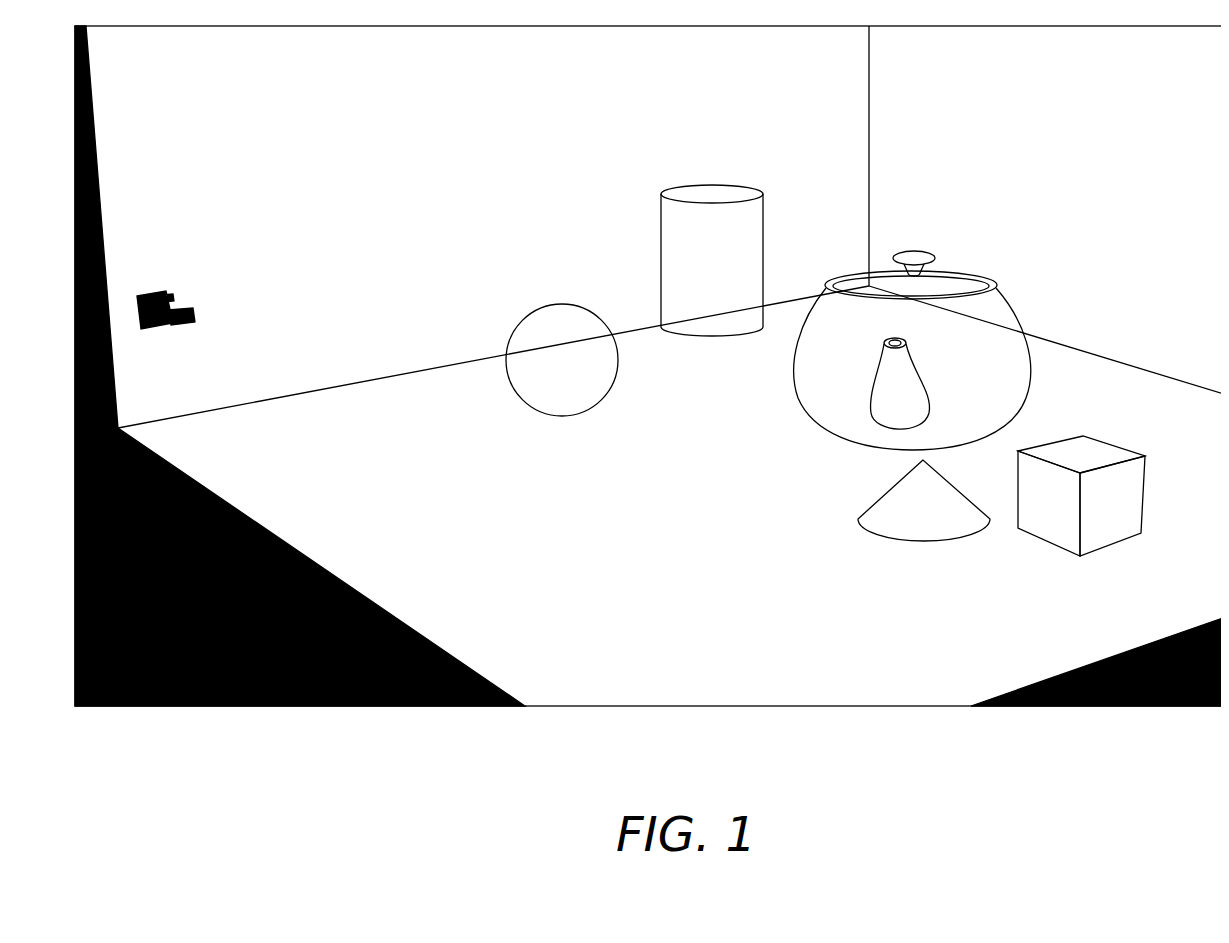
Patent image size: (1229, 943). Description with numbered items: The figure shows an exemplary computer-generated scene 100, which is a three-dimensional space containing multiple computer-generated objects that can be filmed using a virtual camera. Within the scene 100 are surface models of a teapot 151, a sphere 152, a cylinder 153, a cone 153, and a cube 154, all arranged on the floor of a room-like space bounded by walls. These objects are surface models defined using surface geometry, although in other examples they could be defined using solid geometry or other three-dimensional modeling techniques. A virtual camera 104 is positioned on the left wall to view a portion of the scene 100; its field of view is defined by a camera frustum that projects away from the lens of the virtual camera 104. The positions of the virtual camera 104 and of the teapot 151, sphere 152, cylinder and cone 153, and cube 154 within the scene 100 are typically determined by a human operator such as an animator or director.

The scene 100 is at (387, 126).
The virtual camera 104 is at (149, 284).
The teapot 151 is at (908, 240).
The sphere 152 is at (548, 292).
The cylinder and cone 153 is at (712, 177).
The cube 154 is at (1097, 427).